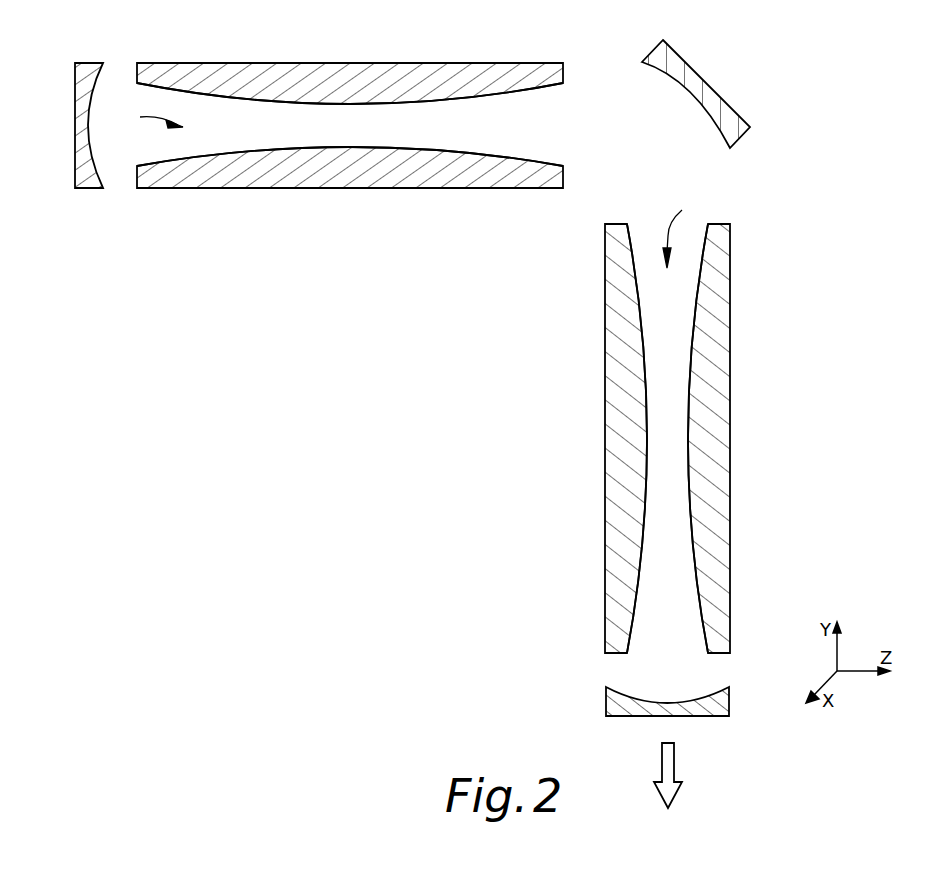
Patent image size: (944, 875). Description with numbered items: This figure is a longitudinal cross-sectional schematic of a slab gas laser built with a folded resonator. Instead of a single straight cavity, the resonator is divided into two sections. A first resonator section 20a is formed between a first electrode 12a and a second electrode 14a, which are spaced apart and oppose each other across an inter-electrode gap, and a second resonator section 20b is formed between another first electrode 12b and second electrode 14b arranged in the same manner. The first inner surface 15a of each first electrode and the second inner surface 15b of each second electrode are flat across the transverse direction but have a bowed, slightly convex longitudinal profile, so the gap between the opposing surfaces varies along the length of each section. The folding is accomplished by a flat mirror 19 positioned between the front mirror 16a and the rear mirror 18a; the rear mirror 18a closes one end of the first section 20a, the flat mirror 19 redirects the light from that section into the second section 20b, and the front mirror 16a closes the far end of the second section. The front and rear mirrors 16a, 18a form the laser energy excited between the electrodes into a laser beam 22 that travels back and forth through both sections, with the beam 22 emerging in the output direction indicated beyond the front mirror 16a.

The first electrode 12a is at (176, 63).
The second electrode 14a is at (172, 189).
The first inner surface 15a is at (437, 104).
The second inner surface 15b is at (527, 156).
The rear mirror 18a is at (75, 72).
The flat mirror 19 is at (714, 85).
The first resonator section 20a is at (142, 118).
The second resonator section 20b is at (690, 233).
The second electrode 14b is at (605, 247).
The first electrode 12b is at (731, 248).
The front mirror 16a is at (606, 700).
The laser beam 22 is at (676, 763).